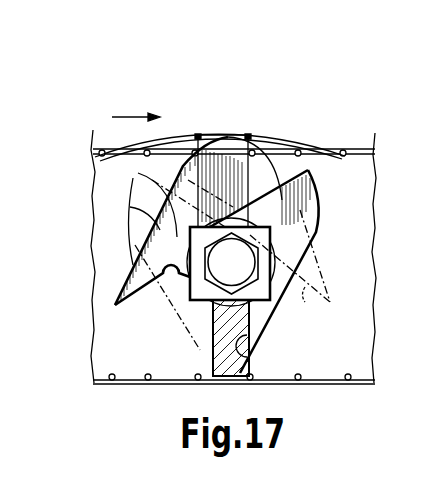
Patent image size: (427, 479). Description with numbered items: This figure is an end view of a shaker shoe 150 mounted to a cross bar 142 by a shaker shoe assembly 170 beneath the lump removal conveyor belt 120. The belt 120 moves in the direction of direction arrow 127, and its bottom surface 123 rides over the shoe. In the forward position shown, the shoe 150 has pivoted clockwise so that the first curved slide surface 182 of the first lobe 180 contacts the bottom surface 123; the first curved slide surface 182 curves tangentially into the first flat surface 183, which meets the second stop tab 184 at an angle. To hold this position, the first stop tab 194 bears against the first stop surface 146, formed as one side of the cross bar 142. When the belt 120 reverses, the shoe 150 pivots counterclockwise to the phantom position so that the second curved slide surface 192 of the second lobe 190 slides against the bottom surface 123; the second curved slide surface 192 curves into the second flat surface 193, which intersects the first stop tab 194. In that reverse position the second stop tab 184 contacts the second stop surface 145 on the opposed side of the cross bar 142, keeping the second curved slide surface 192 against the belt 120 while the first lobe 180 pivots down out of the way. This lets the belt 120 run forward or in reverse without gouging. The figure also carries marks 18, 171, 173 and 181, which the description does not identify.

The section line 18- 18 is at (241, 20).
The lump removal conveyor belt 120 is at (305, 121).
The bottom surface 123 is at (98, 153).
The direction arrow 127 is at (130, 117).
The cross bar 142 is at (240, 376).
The second stop surface 145 is at (203, 355).
The first stop surface 146 is at (263, 302).
The shaker shoe 150 is at (275, 106).
The shaker shoe assembly 170 is at (278, 239).
The notch 171 is at (200, 345).
The bolt head 173 is at (252, 258).
The first lobe 180 is at (245, 130).
The slot 181 is at (132, 207).
The first curved slide surface 182 is at (200, 130).
The first flat surface 183 is at (138, 173).
The second stop tab 184 is at (147, 287).
The second lobe 190 is at (313, 172).
The second curved slide surface 192 is at (317, 190).
The second flat surface 193 is at (250, 335).
The first stop tab 194 is at (312, 305).